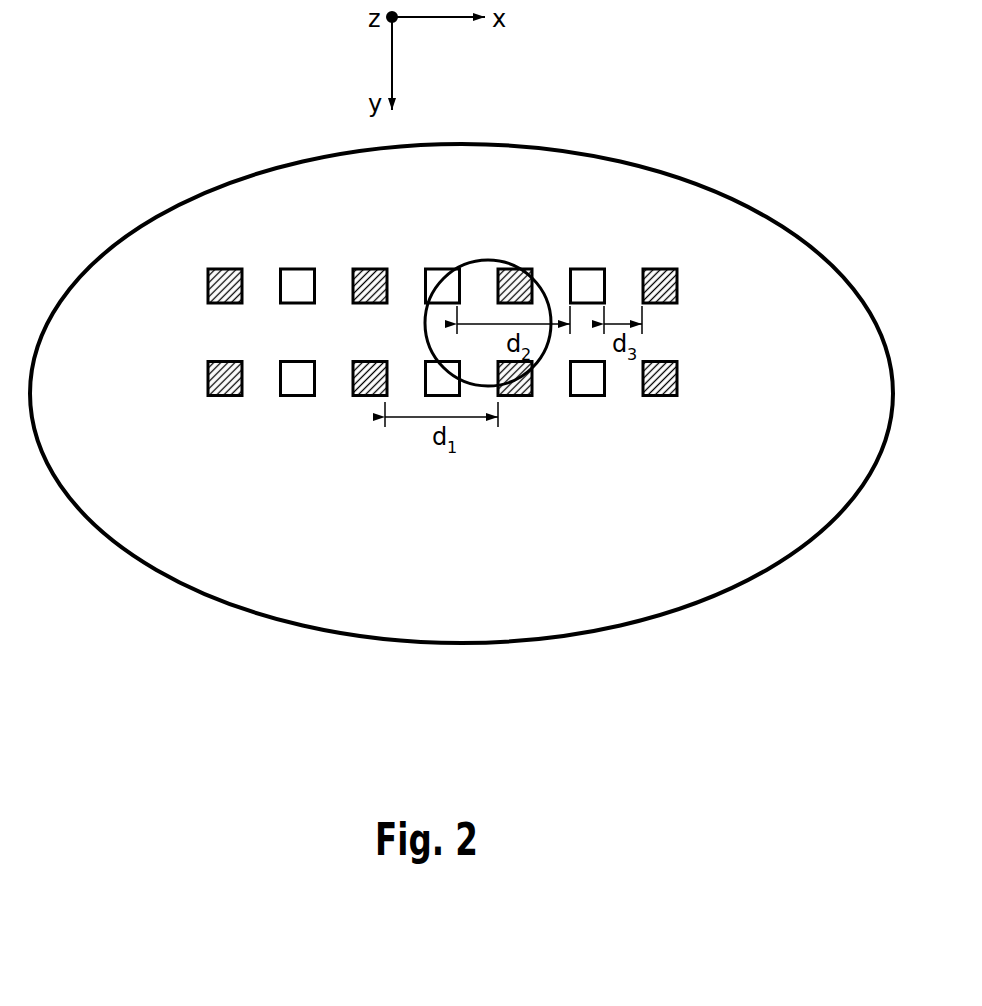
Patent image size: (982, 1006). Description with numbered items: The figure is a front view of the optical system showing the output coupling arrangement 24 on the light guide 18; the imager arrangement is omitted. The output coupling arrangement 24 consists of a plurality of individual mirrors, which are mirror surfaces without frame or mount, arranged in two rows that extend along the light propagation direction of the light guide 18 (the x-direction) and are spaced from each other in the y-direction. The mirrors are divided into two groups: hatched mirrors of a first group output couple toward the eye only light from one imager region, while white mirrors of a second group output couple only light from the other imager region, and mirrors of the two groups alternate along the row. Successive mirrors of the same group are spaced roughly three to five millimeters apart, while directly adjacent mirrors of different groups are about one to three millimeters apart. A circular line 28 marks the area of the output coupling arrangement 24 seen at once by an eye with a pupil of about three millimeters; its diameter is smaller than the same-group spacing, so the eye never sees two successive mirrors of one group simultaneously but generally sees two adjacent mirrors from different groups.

The light guide 18 is at (163, 228).
The output coupling arrangement 24 is at (393, 262).
The circular line 28 is at (483, 260).